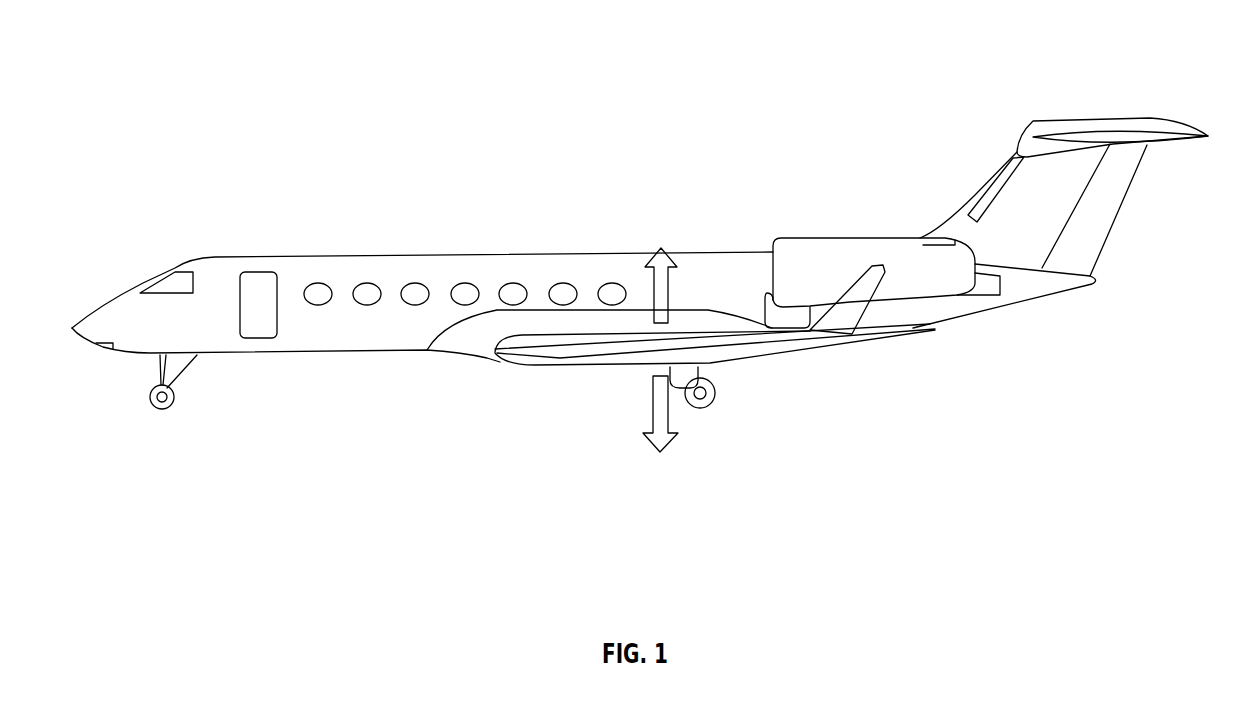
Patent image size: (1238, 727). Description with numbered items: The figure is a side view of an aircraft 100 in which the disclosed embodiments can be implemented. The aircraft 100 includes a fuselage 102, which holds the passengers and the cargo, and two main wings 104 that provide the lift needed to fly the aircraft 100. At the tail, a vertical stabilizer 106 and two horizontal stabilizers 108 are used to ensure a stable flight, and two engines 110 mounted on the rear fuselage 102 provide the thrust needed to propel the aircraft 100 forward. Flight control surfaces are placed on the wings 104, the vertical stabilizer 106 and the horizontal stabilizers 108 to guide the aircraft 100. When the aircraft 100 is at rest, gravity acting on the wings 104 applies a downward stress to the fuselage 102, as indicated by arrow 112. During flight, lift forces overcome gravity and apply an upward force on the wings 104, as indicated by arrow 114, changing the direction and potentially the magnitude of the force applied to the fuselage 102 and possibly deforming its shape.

The aircraft 100 is at (128, 78).
The fuselage 102 is at (385, 255).
The main wing 104 is at (860, 297).
The vertical stabilizer 106 is at (1103, 253).
The horizontal stabilizer 108 is at (1157, 118).
The engine 110 is at (793, 237).
The arrow indicating downward stress 112 is at (652, 417).
The arrow indicating upward force 114 is at (670, 288).